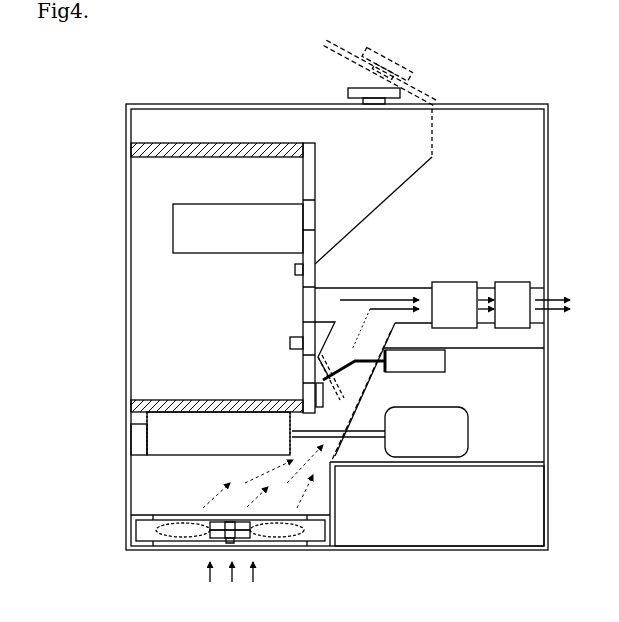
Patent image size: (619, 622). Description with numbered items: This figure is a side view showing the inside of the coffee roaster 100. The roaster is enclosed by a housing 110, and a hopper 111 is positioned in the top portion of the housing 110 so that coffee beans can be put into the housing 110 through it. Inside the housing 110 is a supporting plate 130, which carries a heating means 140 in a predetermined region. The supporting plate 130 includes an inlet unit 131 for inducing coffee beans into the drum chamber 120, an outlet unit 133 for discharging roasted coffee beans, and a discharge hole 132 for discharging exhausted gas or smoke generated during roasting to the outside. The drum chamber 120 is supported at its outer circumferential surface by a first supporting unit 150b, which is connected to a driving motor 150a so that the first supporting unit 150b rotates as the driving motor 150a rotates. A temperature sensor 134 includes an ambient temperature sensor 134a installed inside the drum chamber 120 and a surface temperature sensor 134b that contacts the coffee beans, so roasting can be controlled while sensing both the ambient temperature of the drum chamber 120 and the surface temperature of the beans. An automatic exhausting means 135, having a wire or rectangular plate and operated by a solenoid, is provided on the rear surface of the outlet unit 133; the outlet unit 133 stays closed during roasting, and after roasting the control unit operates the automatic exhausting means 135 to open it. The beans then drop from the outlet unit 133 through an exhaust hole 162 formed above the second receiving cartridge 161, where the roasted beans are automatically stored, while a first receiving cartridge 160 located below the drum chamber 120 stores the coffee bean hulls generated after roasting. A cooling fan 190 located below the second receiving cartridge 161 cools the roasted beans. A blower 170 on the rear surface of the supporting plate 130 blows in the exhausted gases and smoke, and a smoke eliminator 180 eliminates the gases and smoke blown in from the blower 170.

The coffee roaster 100 is at (96, 76).
The housing 110 is at (121, 240).
The hopper 111 is at (345, 109).
The drum chamber 120 is at (213, 143).
The supporting plate 130 is at (310, 143).
The inlet unit 131 is at (315, 205).
The discharge hole 132 is at (307, 305).
The outlet unit 133 is at (316, 366).
The temperature sensor 134 is at (173, 308).
The ambient temperature sensor 134a is at (295, 269).
The surface temperature sensor 134b is at (290, 341).
The automatic exhausting means 135 is at (445, 360).
The heating means 140 is at (238, 204).
The driving motor 150a is at (466, 428).
The first supporting unit 150b is at (137, 447).
The first receiving cartridge 160 is at (133, 434).
The second receiving cartridge 161 is at (147, 493).
The exhaust hole 162 is at (323, 445).
The blower 170 is at (455, 290).
The smoke eliminator 180 is at (510, 290).
The cooling fan 190 is at (160, 528).